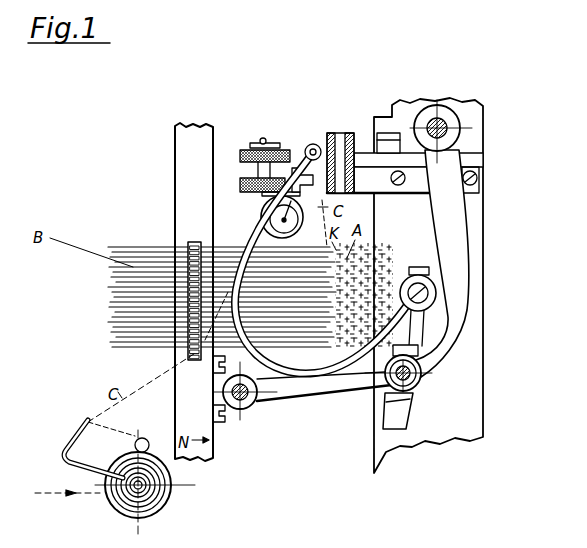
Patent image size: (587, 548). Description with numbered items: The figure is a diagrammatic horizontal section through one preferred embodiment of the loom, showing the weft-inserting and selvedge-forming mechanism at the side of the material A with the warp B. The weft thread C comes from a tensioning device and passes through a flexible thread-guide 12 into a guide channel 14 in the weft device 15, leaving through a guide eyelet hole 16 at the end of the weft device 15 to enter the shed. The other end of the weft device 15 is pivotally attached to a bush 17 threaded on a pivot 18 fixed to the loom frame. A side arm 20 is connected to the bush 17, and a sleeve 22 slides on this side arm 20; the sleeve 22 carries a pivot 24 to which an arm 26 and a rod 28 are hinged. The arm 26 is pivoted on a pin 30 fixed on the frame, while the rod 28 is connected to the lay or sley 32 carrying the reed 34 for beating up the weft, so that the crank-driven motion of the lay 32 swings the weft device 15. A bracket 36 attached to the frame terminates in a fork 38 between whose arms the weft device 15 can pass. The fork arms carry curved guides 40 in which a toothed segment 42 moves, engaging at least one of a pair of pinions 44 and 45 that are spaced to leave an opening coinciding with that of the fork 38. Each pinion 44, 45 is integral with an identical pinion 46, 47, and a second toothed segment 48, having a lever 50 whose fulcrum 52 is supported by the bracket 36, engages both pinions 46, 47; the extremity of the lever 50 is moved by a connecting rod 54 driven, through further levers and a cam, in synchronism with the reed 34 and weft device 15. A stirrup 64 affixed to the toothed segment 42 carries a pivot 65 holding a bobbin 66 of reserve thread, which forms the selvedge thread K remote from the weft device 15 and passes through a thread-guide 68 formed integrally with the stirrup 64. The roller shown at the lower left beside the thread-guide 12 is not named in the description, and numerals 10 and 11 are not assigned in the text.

The roller 10 is at (170, 510).
The wires 11 is at (133, 265).
The flexible thread-guide 12 is at (85, 419).
The guide channel 14 is at (187, 240).
The weft device 15 is at (312, 370).
The guide eyelet hole 16 is at (310, 144).
The bush 17 is at (427, 305).
The pivot 18 is at (422, 285).
The side arm 20 is at (405, 428).
The sleeve 22 is at (457, 448).
The pivot 24 is at (423, 383).
The arm 26 is at (455, 327).
The rod 28 is at (347, 383).
The pin 30 is at (443, 123).
The lay or sley 32 is at (203, 455).
The reed 34 is at (150, 247).
The bracket 36 is at (360, 183).
The fork 38 is at (331, 112).
The curved guides 40 is at (300, 168).
The toothed segment 42 is at (265, 162).
The pinion 44 is at (245, 188).
The pinion 45 is at (192, 147).
The pinion 46 is at (258, 175).
The pinion 47 is at (215, 126).
The toothed segment 48 is at (278, 150).
The lever 50 is at (365, 153).
The fulcrum 52 is at (347, 133).
The connecting rod 54 is at (390, 133).
The stirrup 64 is at (252, 145).
The pivot 65 is at (206, 102).
The bobbin 66 is at (268, 208).
The thread-guide 68 is at (242, 193).